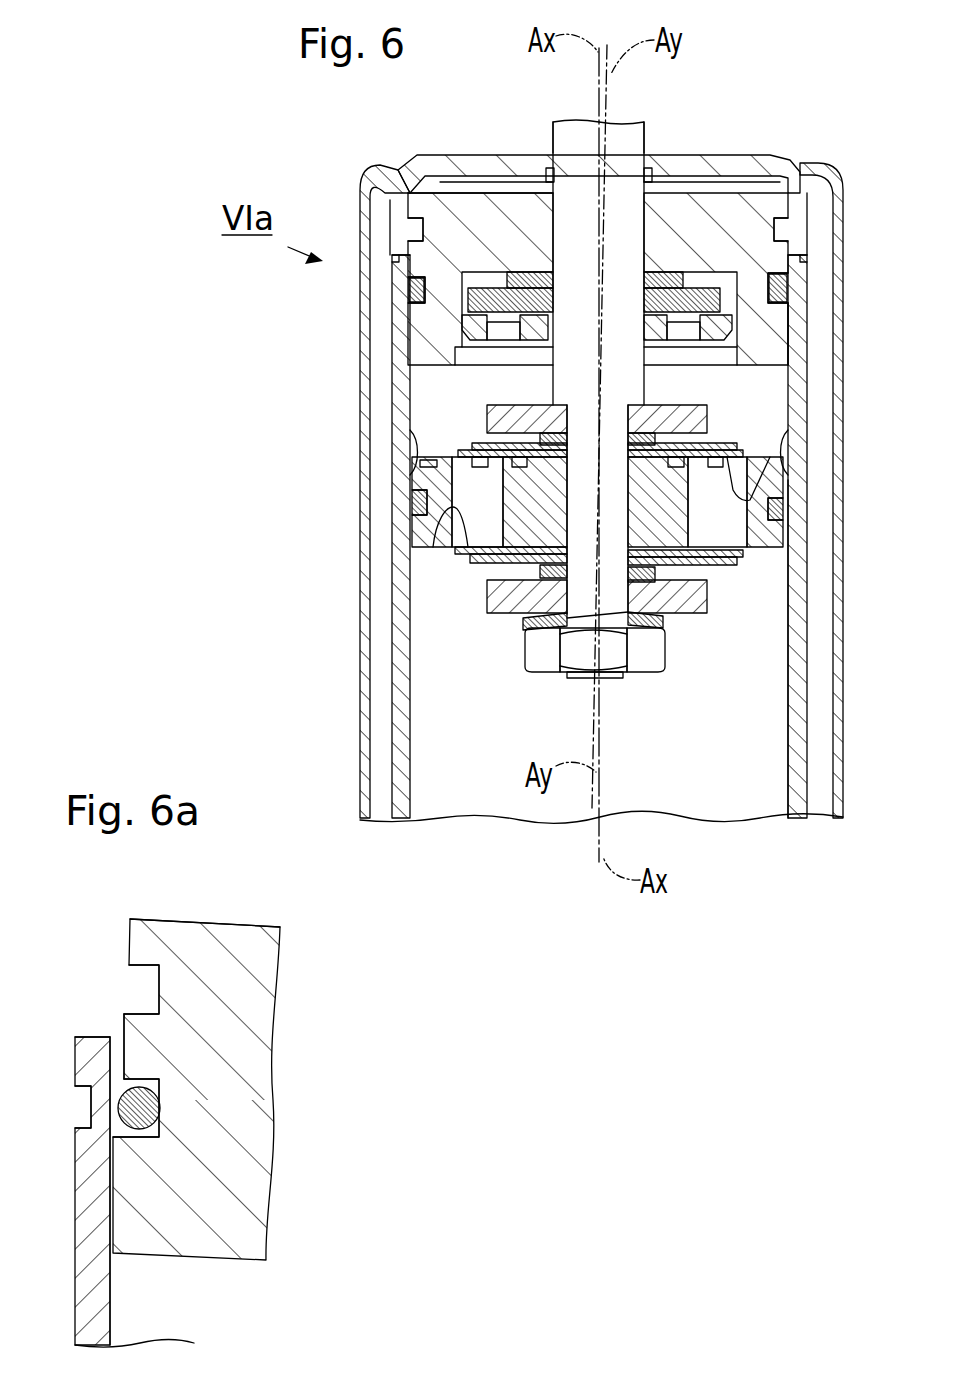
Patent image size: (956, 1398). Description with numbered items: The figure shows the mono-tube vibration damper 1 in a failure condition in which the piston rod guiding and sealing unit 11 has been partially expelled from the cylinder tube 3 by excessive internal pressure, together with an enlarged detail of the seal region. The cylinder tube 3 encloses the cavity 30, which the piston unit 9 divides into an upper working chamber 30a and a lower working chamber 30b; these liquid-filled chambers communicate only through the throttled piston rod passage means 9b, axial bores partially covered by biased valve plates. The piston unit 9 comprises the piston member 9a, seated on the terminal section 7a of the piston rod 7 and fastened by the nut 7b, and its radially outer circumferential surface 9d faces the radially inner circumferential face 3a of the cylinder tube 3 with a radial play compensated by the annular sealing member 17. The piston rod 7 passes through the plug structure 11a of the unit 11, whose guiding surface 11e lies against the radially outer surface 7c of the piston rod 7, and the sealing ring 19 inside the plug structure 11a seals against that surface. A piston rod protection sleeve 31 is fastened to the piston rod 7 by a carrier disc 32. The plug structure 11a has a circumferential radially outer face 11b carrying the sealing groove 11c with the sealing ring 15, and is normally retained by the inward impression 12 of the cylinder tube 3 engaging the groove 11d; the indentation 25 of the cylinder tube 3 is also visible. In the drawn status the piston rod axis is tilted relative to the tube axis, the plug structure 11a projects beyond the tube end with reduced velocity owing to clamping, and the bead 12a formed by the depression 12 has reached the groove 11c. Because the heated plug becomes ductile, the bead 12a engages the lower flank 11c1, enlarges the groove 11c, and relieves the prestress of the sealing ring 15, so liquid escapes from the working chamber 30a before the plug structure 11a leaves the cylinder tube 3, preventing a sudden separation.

In FIG. 6, the mono-tube vibration damper 1 is at (324, 675).
In FIG. 6, the cylinder tube 3 is at (800, 683).
In FIG. 6A, the cylinder tube 3 is at (88, 1292).
In FIG. 6, the radially inner circumferential face of the cylinder tube 3a is at (784, 792).
In FIG. 6A, the radially inner circumferential face of the cylinder tube 3a is at (111, 1292).
In FIG. 6, the piston rod 7 is at (627, 122).
In FIG. 6, the terminal section of the piston rod 7a is at (640, 600).
In FIG. 6, the nut 7b is at (545, 650).
In FIG. 6, the radially outer surface of the piston rod 7c is at (552, 135).
In FIG. 6, the piston unit 9 is at (737, 545).
In FIG. 6, the piston member 9a is at (427, 473).
In FIG. 6, the piston rod passage means 9b is at (480, 518).
In FIG. 6, the radially outer circumferential surface of the piston member 9d is at (410, 532).
In FIG. 6, the piston rod guiding and sealing unit 11 is at (713, 193).
In FIG. 6A, the piston rod guiding and sealing unit 11 is at (240, 1230).
In FIG. 6, the plug structure 11a is at (772, 232).
In FIG. 6A, the plug structure 11a is at (258, 1008).
In FIG. 6, the circumferential radially outer face of the plug structure 11b is at (800, 350).
In FIG. 6A, the circumferential radially outer face of the plug structure 11b is at (127, 1024).
In FIG. 6, the sealing groove 11c is at (440, 298).
In FIG. 6A, the sealing groove 11c is at (150, 1140).
In FIG. 6, the lower flank of the groove 11c1 is at (803, 325).
In FIG. 6, the groove of the plug structure 11d is at (413, 231).
In FIG. 6A, the groove of the plug structure 11d is at (143, 983).
In FIG. 6, the guiding surface 11e is at (558, 232).
In FIG. 6, the impression 12 is at (790, 278).
In FIG. 6A, the impression 12 is at (87, 1108).
In FIG. 6, the bead 12a is at (787, 298).
In FIG. 6, the sealing ring 15 is at (410, 288).
In FIG. 6A, the sealing ring 15 is at (160, 1103).
In FIG. 6, the annular sealing member 17 is at (785, 506).
In FIG. 6, the sealing ring 19 is at (663, 274).
In FIG. 6, the indentation 25 is at (790, 443).
In FIG. 6, the cavity 30 is at (460, 795).
In FIG. 6, the upper working chamber 30a is at (752, 385).
In FIG. 6, the lower working chamber 30b is at (700, 792).
In FIG. 6, the piston rod protection sleeve 31 is at (843, 770).
In FIG. 6, the carrier disc 32 is at (468, 154).